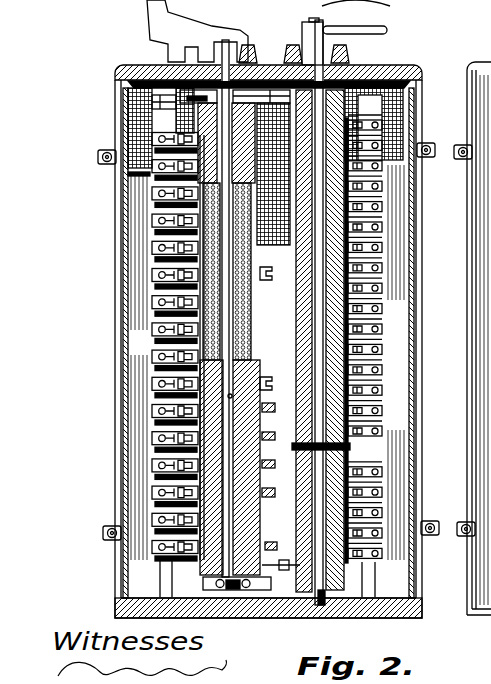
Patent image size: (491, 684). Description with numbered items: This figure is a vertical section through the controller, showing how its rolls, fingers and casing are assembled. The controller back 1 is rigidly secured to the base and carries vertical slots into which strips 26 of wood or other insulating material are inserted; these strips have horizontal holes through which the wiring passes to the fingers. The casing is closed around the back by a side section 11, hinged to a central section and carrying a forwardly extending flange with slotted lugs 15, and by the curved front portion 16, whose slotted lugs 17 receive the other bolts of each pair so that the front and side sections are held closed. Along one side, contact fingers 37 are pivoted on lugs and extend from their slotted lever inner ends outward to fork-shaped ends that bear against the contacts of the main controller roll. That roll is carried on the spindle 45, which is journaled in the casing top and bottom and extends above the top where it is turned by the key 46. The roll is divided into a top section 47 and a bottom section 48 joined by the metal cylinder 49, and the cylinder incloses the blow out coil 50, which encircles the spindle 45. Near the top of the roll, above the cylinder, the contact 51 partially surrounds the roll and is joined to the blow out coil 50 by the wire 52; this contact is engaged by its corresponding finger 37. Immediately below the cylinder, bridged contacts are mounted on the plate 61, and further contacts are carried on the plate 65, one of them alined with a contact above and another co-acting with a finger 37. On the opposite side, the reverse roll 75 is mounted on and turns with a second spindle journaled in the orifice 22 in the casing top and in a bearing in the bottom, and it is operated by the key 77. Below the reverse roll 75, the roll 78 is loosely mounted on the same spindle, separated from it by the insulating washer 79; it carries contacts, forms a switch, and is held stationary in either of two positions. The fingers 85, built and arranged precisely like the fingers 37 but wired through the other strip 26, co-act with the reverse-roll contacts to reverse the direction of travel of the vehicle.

The controller back 1 is at (140, 428).
The side section of the casing back 11 is at (296, 530).
The slotted lugs 15 is at (470, 163).
The curved front portion of the casing 16 is at (326, 494).
The slotted lugs 17 is at (462, 144).
The orifice 22 is at (328, 75).
The insulating strips 26 is at (165, 570).
The contact fingers 37 is at (99, 161).
The spindle 45 is at (229, 62).
The key 46 is at (148, 9).
The top section of the main controller roll 47 is at (153, 120).
The bottom section of the main controller roll 48 is at (157, 394).
The metal cylinder 49 is at (249, 300).
The blow out coil 50 is at (248, 248).
The contact 51 is at (118, 124).
The wire 52 is at (148, 174).
The plate 61 is at (200, 440).
The plate 65 is at (262, 450).
The reverse roll 75 is at (296, 365).
The key 77 is at (390, 28).
The roll switch 78 is at (310, 590).
The insulating washer 79 is at (380, 449).
The fingers 85 is at (384, 244).